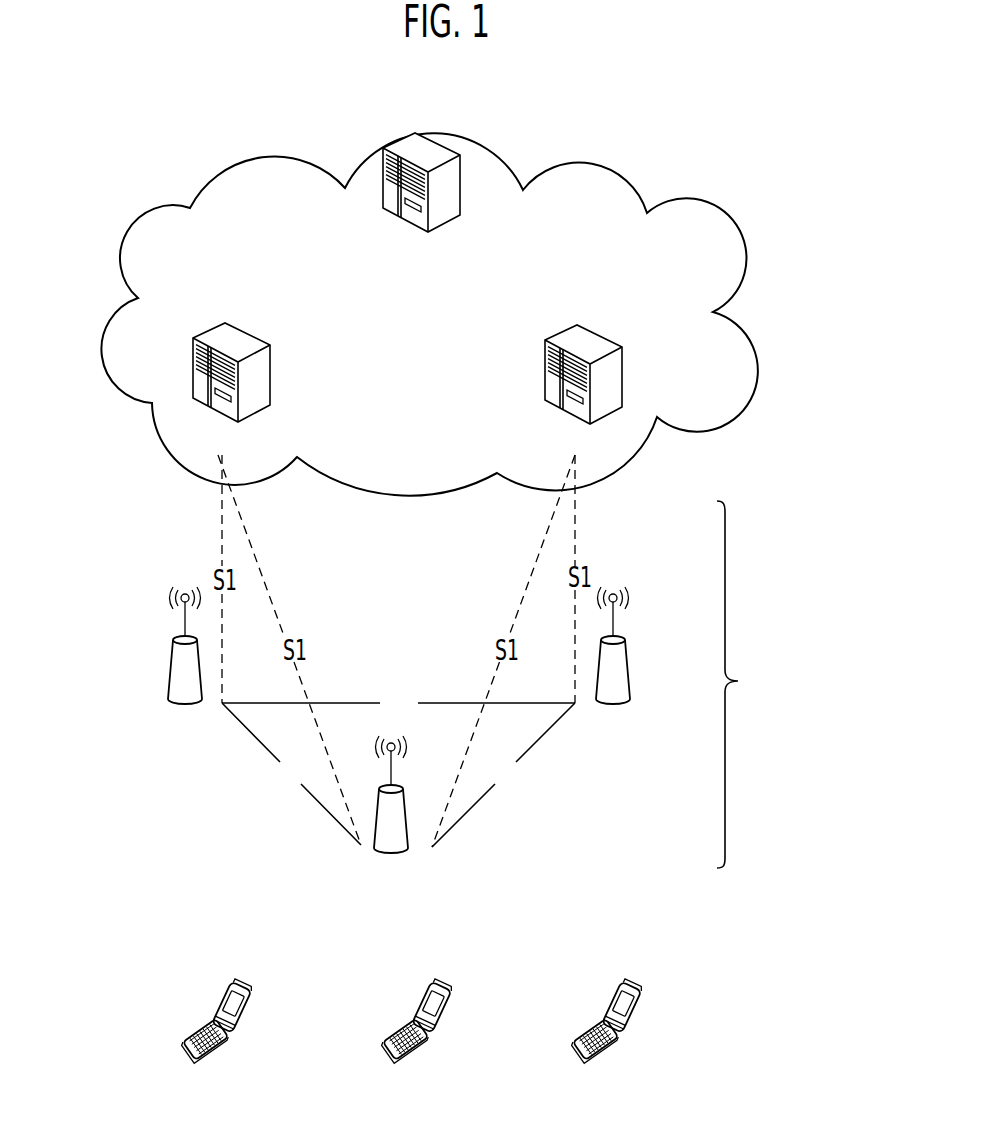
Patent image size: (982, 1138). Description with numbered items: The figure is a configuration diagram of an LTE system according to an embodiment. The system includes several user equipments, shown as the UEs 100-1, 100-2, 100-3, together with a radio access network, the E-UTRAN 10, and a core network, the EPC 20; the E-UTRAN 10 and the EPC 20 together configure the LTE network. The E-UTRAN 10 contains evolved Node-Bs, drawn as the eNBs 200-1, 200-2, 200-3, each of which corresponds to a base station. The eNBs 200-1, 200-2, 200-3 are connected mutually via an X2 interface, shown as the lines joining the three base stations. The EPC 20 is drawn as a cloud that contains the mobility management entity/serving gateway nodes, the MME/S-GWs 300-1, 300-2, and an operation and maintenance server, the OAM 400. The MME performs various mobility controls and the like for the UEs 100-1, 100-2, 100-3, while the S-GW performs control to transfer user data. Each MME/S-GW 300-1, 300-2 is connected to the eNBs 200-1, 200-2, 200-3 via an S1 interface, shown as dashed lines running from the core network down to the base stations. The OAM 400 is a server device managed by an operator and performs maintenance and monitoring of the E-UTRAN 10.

The E-UTRAN 10 is at (532, 684).
The EPC 20 is at (627, 176).
The UE 100-1 is at (232, 988).
The UE 100-2 is at (432, 988).
The UE 100-3 is at (622, 988).
The eNB 200-1 is at (170, 672).
The eNB 200-2 is at (408, 832).
The eNB 200-3 is at (650, 642).
The MME/S-GW 300-1 is at (250, 334).
The MME/S-GW 300-2 is at (630, 312).
The OAM 400 is at (443, 117).